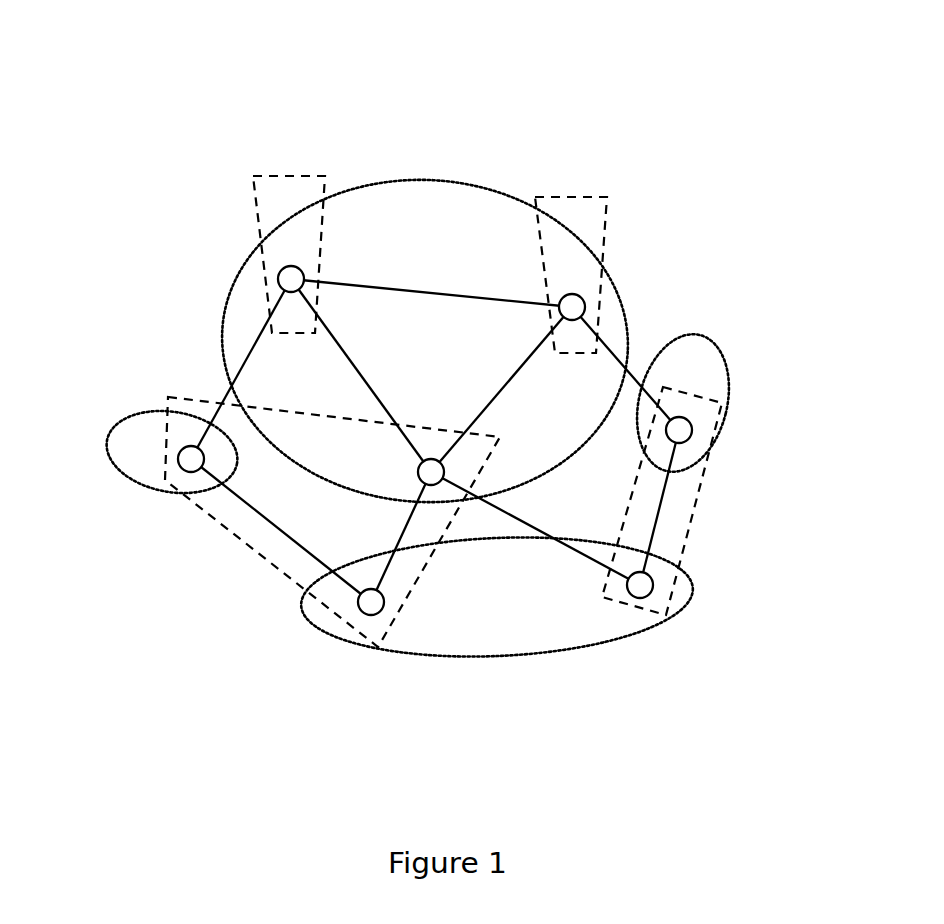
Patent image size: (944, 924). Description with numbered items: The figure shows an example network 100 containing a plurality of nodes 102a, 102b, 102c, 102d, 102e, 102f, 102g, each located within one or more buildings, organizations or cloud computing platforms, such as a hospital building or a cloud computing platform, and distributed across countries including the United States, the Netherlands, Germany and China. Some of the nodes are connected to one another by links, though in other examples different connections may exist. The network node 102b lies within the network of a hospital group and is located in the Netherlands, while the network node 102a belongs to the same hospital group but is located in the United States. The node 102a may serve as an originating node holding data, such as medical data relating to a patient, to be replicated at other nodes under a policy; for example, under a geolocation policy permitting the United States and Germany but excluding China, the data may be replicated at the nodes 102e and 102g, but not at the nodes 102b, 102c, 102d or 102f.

The network 100 is at (166, 109).
The network node 102a is at (653, 582).
The network node 102b is at (692, 426).
The network node 102c is at (584, 296).
The network node 102d is at (420, 481).
The network node 102e is at (368, 615).
The network node 102f is at (278, 279).
The network node 102g is at (186, 473).